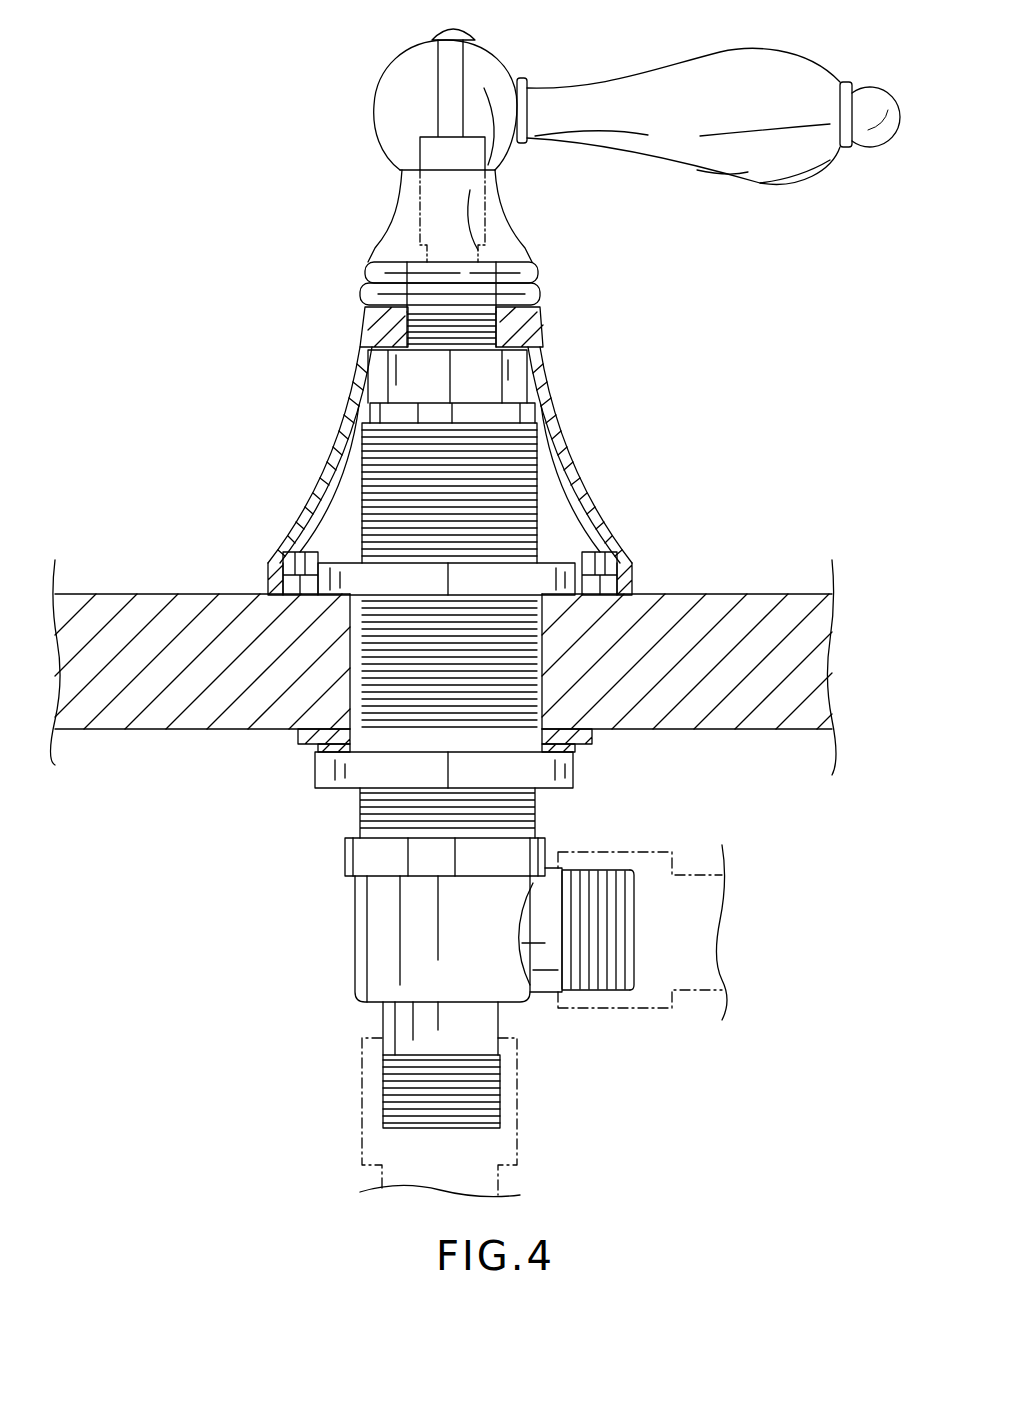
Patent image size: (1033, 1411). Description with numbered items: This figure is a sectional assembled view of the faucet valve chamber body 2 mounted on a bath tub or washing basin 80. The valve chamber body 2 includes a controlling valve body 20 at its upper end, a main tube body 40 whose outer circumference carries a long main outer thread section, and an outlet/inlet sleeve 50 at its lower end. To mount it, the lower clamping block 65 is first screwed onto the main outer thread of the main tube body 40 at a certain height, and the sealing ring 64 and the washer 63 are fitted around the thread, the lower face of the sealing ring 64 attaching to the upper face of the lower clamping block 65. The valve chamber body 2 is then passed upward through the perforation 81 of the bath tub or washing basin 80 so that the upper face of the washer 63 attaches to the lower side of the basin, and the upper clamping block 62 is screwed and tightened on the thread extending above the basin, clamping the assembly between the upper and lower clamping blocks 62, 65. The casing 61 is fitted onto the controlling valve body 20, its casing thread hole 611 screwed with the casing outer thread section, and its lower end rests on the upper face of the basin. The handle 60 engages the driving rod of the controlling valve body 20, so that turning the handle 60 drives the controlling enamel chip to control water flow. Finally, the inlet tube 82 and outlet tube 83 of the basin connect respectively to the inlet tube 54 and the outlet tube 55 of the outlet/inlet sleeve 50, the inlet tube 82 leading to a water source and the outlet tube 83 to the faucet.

The handle 60 is at (397, 88).
The casing thread hole 611 is at (520, 335).
The controlling valve body 20 is at (516, 392).
The casing 61 is at (322, 465).
The main tube body 40 is at (540, 497).
The upper clamping block 62 is at (554, 586).
The bath tub or washing basin 80 is at (133, 591).
The perforation 81 is at (350, 643).
The washer 63 is at (598, 745).
The sealing ring 64 is at (576, 753).
The lower clamping block 65 is at (316, 787).
The valve chamber body 2 is at (334, 888).
The outlet/inlet sleeve 50 is at (366, 963).
The outlet tube 55 is at (547, 970).
The inlet tube 54 is at (400, 1022).
The outlet tube 83 is at (697, 973).
The inlet tube 82 is at (388, 1170).